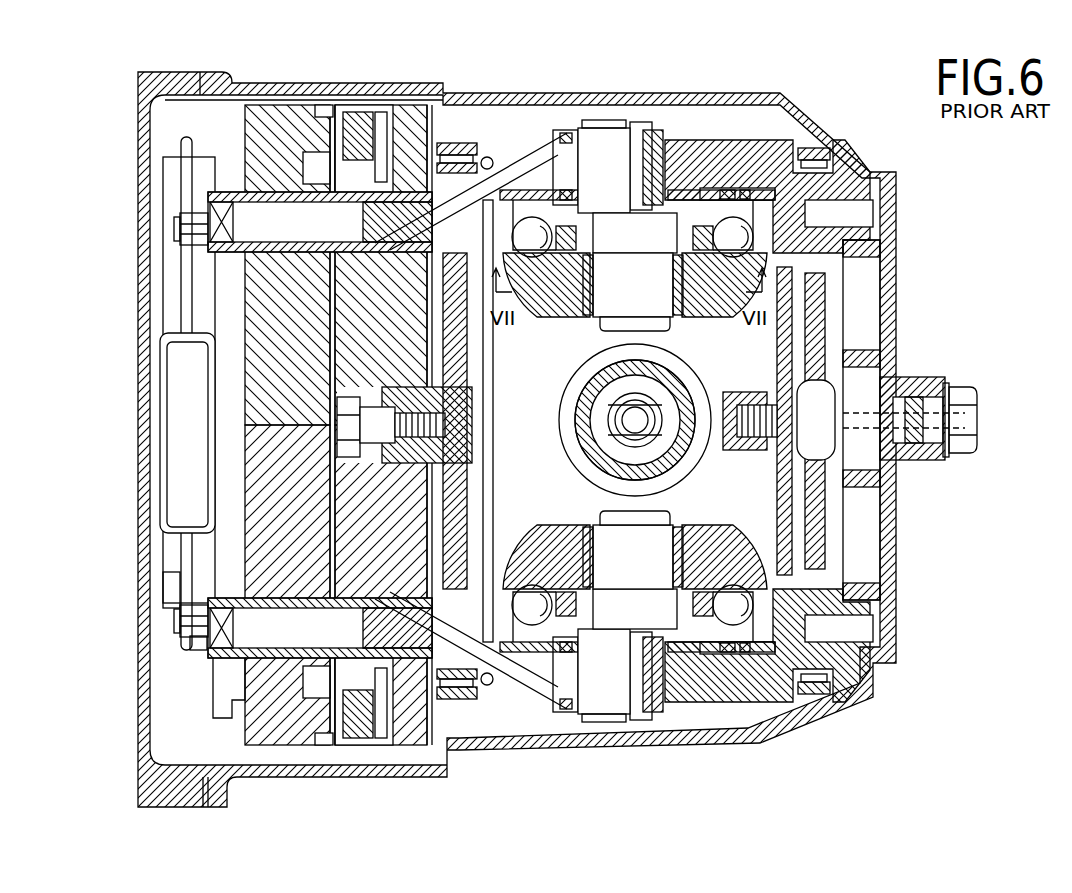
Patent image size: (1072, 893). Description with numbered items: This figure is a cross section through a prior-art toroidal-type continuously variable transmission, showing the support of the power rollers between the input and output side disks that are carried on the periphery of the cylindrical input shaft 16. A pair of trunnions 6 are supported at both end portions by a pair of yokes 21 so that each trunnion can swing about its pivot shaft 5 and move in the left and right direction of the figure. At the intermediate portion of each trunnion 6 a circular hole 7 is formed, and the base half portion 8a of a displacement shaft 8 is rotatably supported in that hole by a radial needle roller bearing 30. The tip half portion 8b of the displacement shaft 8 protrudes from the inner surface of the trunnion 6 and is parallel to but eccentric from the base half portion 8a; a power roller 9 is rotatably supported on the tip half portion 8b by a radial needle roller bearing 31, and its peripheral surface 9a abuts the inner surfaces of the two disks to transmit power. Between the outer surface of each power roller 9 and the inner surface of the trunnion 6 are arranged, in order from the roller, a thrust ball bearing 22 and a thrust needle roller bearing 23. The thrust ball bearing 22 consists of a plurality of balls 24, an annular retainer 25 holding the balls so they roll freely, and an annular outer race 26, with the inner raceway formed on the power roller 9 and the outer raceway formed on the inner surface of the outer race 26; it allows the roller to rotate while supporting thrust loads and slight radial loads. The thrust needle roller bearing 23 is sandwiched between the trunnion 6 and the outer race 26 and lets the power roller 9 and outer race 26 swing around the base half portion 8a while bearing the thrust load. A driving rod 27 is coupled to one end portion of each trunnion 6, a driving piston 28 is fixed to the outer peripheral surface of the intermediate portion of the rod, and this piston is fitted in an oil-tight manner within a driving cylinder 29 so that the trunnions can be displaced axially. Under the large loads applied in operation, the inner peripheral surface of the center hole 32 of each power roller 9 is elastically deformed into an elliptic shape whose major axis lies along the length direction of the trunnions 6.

The pivot shaft 5 is at (450, 185).
The trunnion 6 is at (782, 150).
The circular hole 7 is at (573, 150).
The displacement shaft 8 is at (657, 213).
The base half portion 8a is at (602, 140).
The tip half portion 8b is at (610, 315).
The power roller 9 is at (723, 300).
The peripheral surface 9a is at (528, 300).
The input shaft 16 is at (595, 415).
The yoke 21 is at (470, 482).
The thrust ball bearing 22 is at (692, 235).
The thrust needle roller bearing 23 is at (692, 197).
The ball 24 is at (532, 225).
The annular retainer 25 is at (497, 173).
The annular outer race 26 is at (753, 190).
The driving rod 27 is at (277, 210).
The driving piston 28 is at (370, 122).
The driving cylinder 29 is at (320, 108).
The radial needle roller bearing 30 is at (650, 133).
The radial needle roller bearing 31 is at (678, 310).
The center hole 32 is at (620, 318).